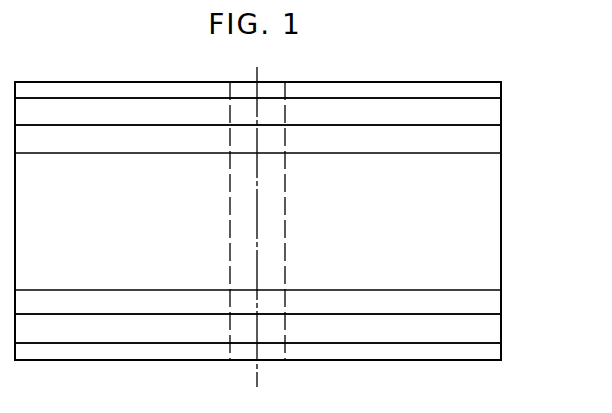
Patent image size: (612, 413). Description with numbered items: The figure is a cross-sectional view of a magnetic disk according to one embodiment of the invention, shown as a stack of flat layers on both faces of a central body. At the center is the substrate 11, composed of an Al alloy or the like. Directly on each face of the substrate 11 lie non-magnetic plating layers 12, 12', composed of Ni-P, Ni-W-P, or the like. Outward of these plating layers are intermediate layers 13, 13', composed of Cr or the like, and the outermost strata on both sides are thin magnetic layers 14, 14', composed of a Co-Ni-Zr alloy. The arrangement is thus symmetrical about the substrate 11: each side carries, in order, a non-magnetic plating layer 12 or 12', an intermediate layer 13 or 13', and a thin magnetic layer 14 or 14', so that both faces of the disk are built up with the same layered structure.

The substrate 11 is at (492, 213).
The non-magnetic plating layer 12 is at (294, 139).
The intermediate layer 13 is at (294, 111).
The thin magnetic layer 14 is at (294, 85).
The non-magnetic plating layer 12' is at (300, 297).
The intermediate layer 13' is at (300, 328).
The thin magnetic layer 14' is at (300, 357).